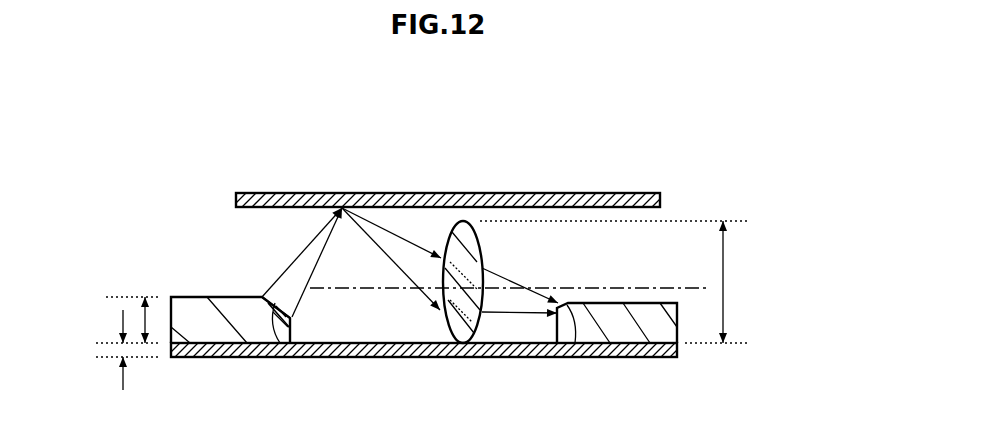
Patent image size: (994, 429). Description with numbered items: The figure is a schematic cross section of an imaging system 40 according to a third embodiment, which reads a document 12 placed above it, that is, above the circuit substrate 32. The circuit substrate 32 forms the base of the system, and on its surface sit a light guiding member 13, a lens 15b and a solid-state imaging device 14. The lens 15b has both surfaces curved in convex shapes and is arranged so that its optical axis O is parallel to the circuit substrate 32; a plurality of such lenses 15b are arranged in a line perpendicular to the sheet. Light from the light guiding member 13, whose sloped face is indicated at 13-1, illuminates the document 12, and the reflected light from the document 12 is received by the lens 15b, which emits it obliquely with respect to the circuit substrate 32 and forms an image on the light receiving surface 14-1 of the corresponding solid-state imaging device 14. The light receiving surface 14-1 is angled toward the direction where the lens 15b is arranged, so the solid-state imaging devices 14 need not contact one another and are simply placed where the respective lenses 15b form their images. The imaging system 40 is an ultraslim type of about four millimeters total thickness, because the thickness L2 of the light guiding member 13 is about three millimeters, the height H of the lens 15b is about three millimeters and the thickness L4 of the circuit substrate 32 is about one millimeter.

The document 12 is at (412, 201).
The light guiding member 13 is at (220, 333).
The reflecting surface 13-1 is at (276, 346).
The solid-state imaging device 14 is at (637, 328).
The light receiving surface 14-1 is at (567, 358).
The lens 15b is at (466, 358).
The circuit substrate 32 is at (405, 358).
The imaging system 40 is at (568, 255).
The optical axis O is at (357, 290).
The thickness of the light guiding member L2 is at (137, 307).
The thickness of the circuit substrate L4 is at (122, 387).
The height of the lens H is at (737, 282).